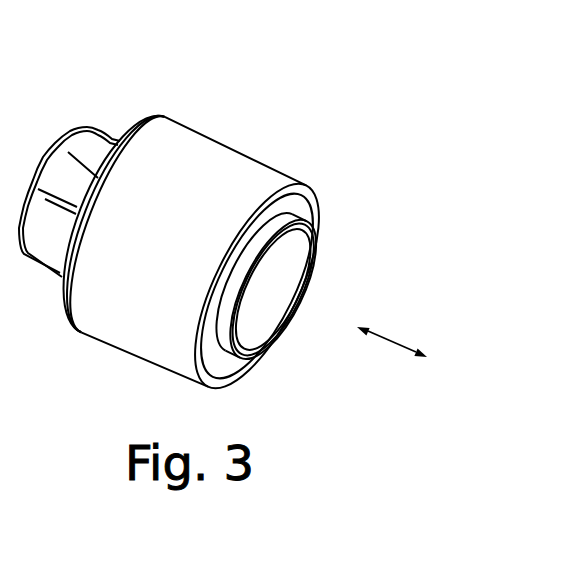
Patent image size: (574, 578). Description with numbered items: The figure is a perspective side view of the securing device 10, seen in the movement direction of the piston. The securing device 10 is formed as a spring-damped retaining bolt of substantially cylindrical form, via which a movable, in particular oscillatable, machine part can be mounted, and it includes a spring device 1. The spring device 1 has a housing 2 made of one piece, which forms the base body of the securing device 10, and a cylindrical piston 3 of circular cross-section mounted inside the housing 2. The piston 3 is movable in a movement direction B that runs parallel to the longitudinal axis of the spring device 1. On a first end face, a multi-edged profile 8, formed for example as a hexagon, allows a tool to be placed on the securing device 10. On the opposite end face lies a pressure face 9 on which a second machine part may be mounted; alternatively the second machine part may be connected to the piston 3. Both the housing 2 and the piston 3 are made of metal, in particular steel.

The spring device 1 is at (355, 237).
The housing 2 is at (183, 170).
The piston 3 is at (304, 296).
The multi-edged profile 8 is at (56, 140).
The pressure face 9 is at (296, 335).
The securing device 10 is at (265, 106).
The movement direction B is at (392, 341).